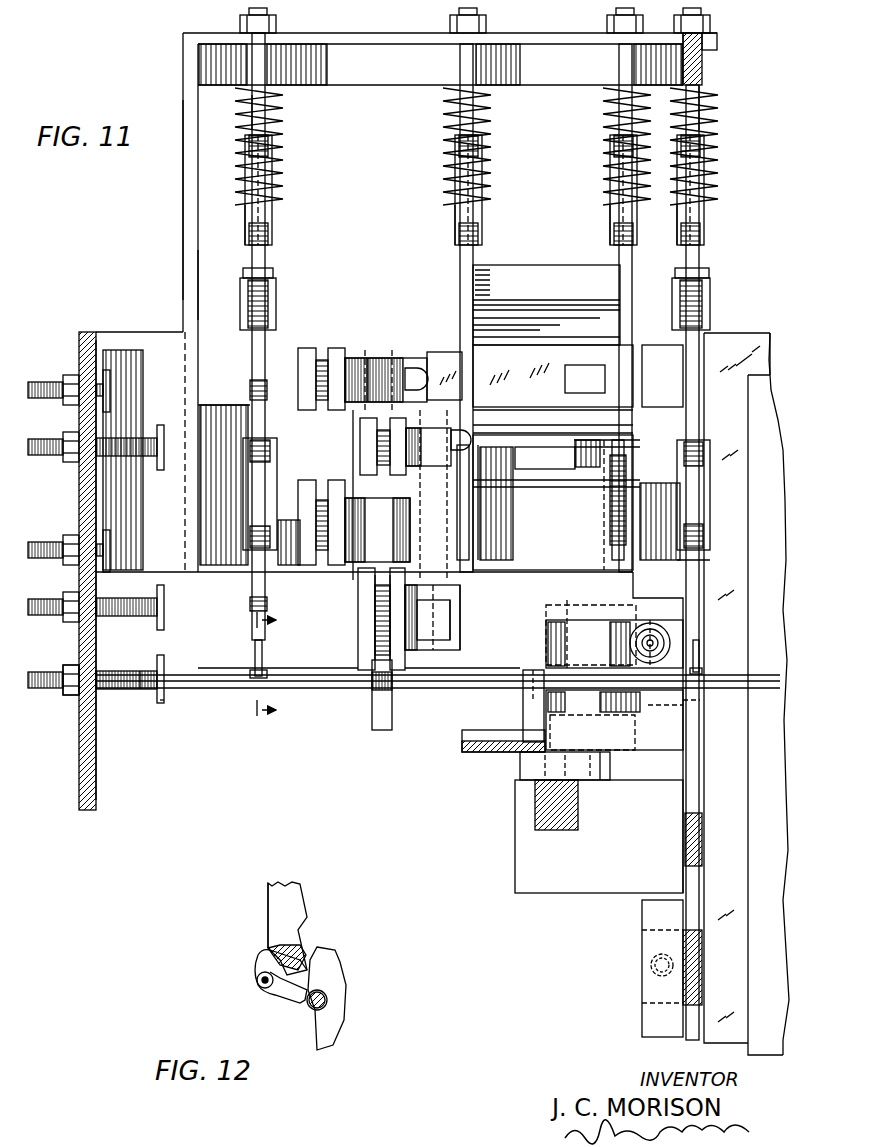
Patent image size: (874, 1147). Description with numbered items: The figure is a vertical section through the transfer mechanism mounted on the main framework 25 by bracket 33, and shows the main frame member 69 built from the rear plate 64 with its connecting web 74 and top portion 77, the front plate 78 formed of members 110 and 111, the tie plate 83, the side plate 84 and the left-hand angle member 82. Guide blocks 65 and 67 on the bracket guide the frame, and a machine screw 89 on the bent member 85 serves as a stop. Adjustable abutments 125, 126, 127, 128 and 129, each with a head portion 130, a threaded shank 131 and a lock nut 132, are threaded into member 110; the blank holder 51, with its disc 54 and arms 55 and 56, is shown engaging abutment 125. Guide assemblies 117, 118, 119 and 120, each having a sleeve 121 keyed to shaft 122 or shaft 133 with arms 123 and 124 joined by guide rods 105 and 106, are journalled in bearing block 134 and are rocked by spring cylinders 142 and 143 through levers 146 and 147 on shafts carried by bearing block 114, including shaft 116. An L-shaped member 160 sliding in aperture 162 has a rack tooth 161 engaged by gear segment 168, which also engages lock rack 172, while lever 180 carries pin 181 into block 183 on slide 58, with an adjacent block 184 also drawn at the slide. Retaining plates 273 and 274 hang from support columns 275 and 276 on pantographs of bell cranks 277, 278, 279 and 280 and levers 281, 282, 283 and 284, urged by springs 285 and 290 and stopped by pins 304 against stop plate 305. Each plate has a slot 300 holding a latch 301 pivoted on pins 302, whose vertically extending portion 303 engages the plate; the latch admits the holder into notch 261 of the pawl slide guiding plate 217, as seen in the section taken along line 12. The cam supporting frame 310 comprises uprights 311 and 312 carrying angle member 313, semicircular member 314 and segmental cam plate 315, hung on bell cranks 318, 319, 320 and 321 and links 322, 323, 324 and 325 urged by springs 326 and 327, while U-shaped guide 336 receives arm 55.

In FIG. 11, the left-hand angle member 82 is at (388, 30).
In FIG. 11, the main frame member 69 is at (181, 228).
In FIG. 11, the member of front plate 111 is at (197, 284).
In FIG. 11, the bracket 33 is at (742, 344).
In FIG. 11, the main framework 25 is at (768, 396).
In FIG. 11, the retaining plate 273 is at (266, 258).
In FIG. 12, the retaining plate 273 is at (292, 905).
In FIG. 11, the upright member 311 is at (460, 258).
In FIG. 11, the upright member 312 is at (619, 258).
In FIG. 11, the retaining plate 274 is at (700, 256).
In FIG. 11, the top portion 77 is at (702, 66).
In FIG. 11, the support column 276 is at (700, 98).
In FIG. 11, the spring 285 is at (283, 115).
In FIG. 11, the spring 326 is at (490, 100).
In FIG. 11, the spring 327 is at (606, 104).
In FIG. 11, the spring 290 is at (718, 118).
In FIG. 11, the support column 275 is at (255, 97).
In FIG. 11, the bell crank 277 is at (273, 220).
In FIG. 11, the bell crank 278 is at (262, 222).
In FIG. 11, the bell crank 318 is at (456, 210).
In FIG. 11, the bell crank 319 is at (462, 226).
In FIG. 11, the bell crank 320 is at (612, 200).
In FIG. 11, the bell crank 321 is at (634, 208).
In FIG. 11, the bell crank 280 is at (720, 197).
In FIG. 11, the bell crank 279 is at (685, 215).
In FIG. 11, the pin 304 is at (273, 274).
In FIG. 11, the stop plate 305 is at (276, 298).
In FIG. 11, the cam supporting frame 310 is at (509, 262).
In FIG. 11, the angle member 313 is at (532, 276).
In FIG. 11, the semicircular member 314 is at (525, 393).
In FIG. 11, the lever 146 is at (598, 373).
In FIG. 11, the guide block 65 is at (652, 356).
In FIG. 11, the lever 147 is at (583, 444).
In FIG. 11, the segmental cam plate 315 is at (550, 585).
In FIG. 11, the link 322 is at (463, 512).
In FIG. 11, the link 323 is at (480, 530).
In FIG. 11, the spring supporting cylinder 143 is at (525, 470).
In FIG. 11, the link 324 is at (612, 510).
In FIG. 11, the link 325 is at (616, 523).
In FIG. 11, the lever 283 is at (680, 493).
In FIG. 11, the lever 284 is at (708, 518).
In FIG. 11, the guide assembly 117 is at (295, 360).
In FIG. 11, the shaft 133 is at (382, 356).
In FIG. 11, the arm 124 is at (372, 398).
In FIG. 11, the spring supporting cylinder 142 is at (444, 354).
In FIG. 11, the arm 123 is at (404, 362).
In FIG. 11, the guide assembly 118 is at (358, 440).
In FIG. 11, the guide assembly 119 is at (297, 556).
In FIG. 11, the lever 281 is at (270, 480).
In FIG. 11, the lever 282 is at (282, 490).
In FIG. 11, the guide assembly 120 is at (357, 600).
In FIG. 11, the guide rod 105 is at (392, 614).
In FIG. 11, the guide rod 106 is at (378, 630).
In FIG. 11, the shaft 122 is at (458, 658).
In FIG. 11, the sleeve 121 is at (452, 628).
In FIG. 11, the bearing block 134 is at (455, 592).
In FIG. 11, the shaft 116 is at (570, 612).
In FIG. 11, the gear segment 168 is at (548, 638).
In FIG. 11, the L-shaped member 160 is at (662, 640).
In FIG. 11, the aperture 162 is at (660, 652).
In FIG. 11, the bearing block 114 is at (625, 620).
In FIG. 11, the blank holder 51 is at (232, 690).
In FIG. 12, the blank holder 51 is at (327, 995).
In FIG. 11, the disc 54 is at (376, 724).
In FIG. 11, the arm 55 is at (530, 723).
In FIG. 11, the arm 56 is at (523, 700).
In FIG. 11, the U-shaped guide 336 is at (478, 752).
In FIG. 11, the lever 180 is at (634, 740).
In FIG. 11, the rack tooth 161 is at (634, 712).
In FIG. 11, the lock rack 172 is at (695, 704).
In FIG. 11, the block 183 is at (518, 768).
In FIG. 11, the pin 181 is at (590, 781).
In FIG. 11, the base block 184 is at (515, 855).
In FIG. 11, the slide 58 is at (540, 810).
In FIG. 11, the connecting web 74 is at (685, 848).
In FIG. 11, the member 85 is at (642, 922).
In FIG. 11, the machine screw 89 is at (652, 961).
In FIG. 11, the rear plate 64 is at (685, 990).
In FIG. 11, the guide block 67 is at (650, 1024).
In FIG. 11, the front plate 78 is at (97, 780).
In FIG. 11, the member of front plate 110 is at (88, 330).
In FIG. 11, the side plate 84 is at (230, 420).
In FIG. 11, the tie plate 83 is at (229, 573).
In FIG. 11, the adjustable abutment 129 is at (111, 386).
In FIG. 11, the adjustable abutment 128 is at (164, 424).
In FIG. 11, the adjustable abutment 127 is at (112, 542).
In FIG. 11, the adjustable abutment 126 is at (165, 614).
In FIG. 11, the head portion 130 is at (160, 702).
In FIG. 11, the threaded shank 131 is at (140, 672).
In FIG. 11, the adjustable abutment 125 is at (163, 706).
In FIG. 11, the lock nut 132 is at (74, 700).
In FIG. 11, the slot 300 is at (263, 644).
In FIG. 12, the slot 300 is at (302, 950).
In FIG. 11, the latch 301 is at (254, 666).
In FIG. 12, the latch 301 is at (283, 996).
In FIG. 11, the section line 12 is at (282, 666).
In FIG. 12, the vertically extending portion 303 is at (259, 952).
In FIG. 12, the pin 302 is at (258, 977).
In FIG. 12, the notch 261 is at (326, 1001).
In FIG. 12, the pawl slide guiding plate 217 is at (333, 963).